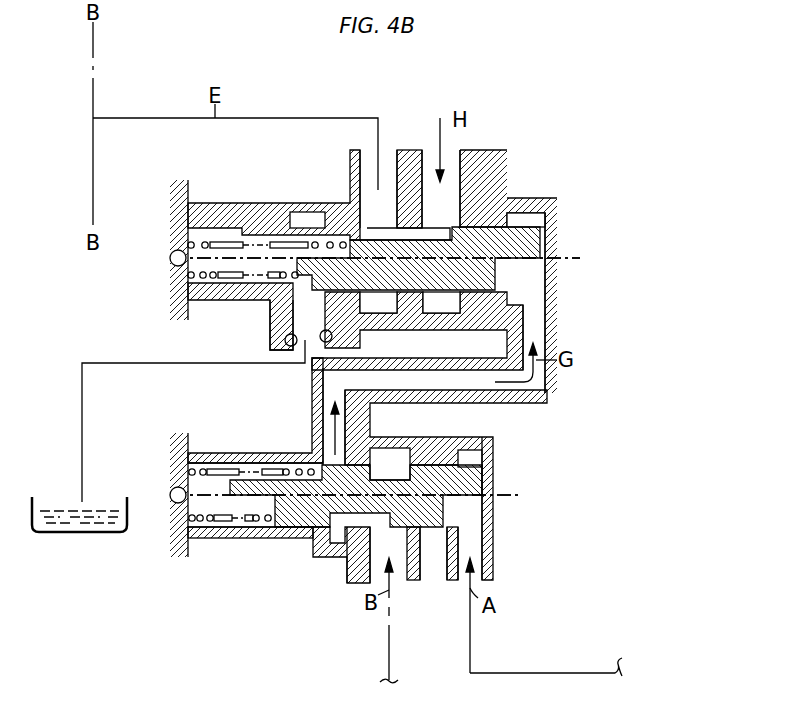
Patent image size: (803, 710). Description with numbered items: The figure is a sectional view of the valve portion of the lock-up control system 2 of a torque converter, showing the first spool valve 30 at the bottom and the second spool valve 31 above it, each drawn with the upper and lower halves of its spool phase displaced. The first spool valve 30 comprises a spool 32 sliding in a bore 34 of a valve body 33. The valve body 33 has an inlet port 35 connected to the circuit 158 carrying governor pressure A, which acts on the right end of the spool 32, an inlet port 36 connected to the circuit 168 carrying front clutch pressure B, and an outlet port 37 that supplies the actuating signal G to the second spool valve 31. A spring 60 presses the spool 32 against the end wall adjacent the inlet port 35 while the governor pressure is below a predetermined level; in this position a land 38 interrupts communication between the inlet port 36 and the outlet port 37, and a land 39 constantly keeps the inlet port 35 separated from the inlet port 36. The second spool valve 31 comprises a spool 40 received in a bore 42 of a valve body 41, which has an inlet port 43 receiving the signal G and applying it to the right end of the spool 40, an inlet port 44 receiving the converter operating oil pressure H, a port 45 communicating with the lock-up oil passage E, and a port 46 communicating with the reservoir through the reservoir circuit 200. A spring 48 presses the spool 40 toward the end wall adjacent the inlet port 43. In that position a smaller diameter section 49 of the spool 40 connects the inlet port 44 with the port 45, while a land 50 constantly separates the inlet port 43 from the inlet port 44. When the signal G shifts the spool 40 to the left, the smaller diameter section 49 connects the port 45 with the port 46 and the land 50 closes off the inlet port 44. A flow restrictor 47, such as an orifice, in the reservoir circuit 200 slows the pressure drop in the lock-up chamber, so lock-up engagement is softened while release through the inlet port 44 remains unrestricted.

The lock-up control system 2 is at (176, 322).
The first spool valve 30 is at (511, 490).
The second spool valve 31 is at (584, 265).
The spool 32 is at (455, 500).
The valve body 33 is at (443, 452).
The bore 34 is at (185, 478).
The inlet port 35 is at (480, 542).
The inlet port 36 is at (351, 555).
The outlet port 37 is at (343, 460).
The land 38 is at (322, 462).
The land 39 is at (480, 458).
The spool 40 is at (547, 237).
The valve body 41 is at (253, 213).
The bore 42 is at (183, 245).
The inlet port 43 is at (532, 289).
The inlet port 44 is at (438, 222).
The port 45 is at (362, 206).
The port 46 is at (303, 293).
The flow restrictor 47 is at (287, 342).
The spring 48 is at (224, 289).
The smaller diameter section 49 is at (380, 243).
The land 50 is at (494, 230).
The spring 60 is at (205, 460).
The circuit 158 is at (505, 673).
The circuit 168 is at (390, 640).
The reservoir circuit 200 is at (82, 404).